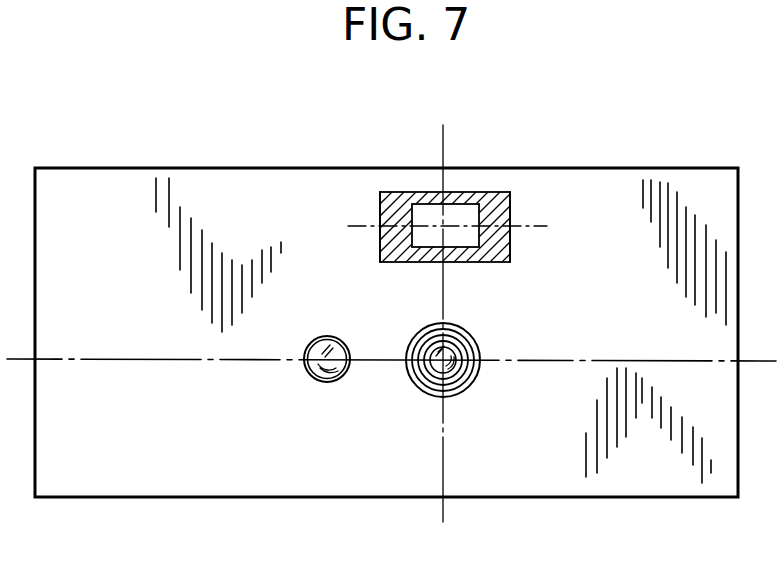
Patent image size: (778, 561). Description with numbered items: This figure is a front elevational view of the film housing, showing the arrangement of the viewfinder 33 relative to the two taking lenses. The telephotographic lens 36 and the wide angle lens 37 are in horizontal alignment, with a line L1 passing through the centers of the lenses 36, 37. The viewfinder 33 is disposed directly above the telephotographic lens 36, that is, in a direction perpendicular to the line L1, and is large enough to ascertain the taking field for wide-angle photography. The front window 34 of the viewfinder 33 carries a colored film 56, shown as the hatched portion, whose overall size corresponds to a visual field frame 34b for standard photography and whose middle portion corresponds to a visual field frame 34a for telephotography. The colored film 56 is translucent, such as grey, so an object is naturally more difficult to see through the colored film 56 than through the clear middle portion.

The viewfinder 33 is at (456, 213).
The front window 34 is at (456, 266).
The visual field frame for telephotography 34a is at (483, 240).
The visual field frame for standard photography 34b is at (510, 212).
The colored film 56 is at (380, 213).
The telephotographic lens 36 is at (452, 373).
The wide angle lens 37 is at (327, 383).
The line L1 is at (122, 357).